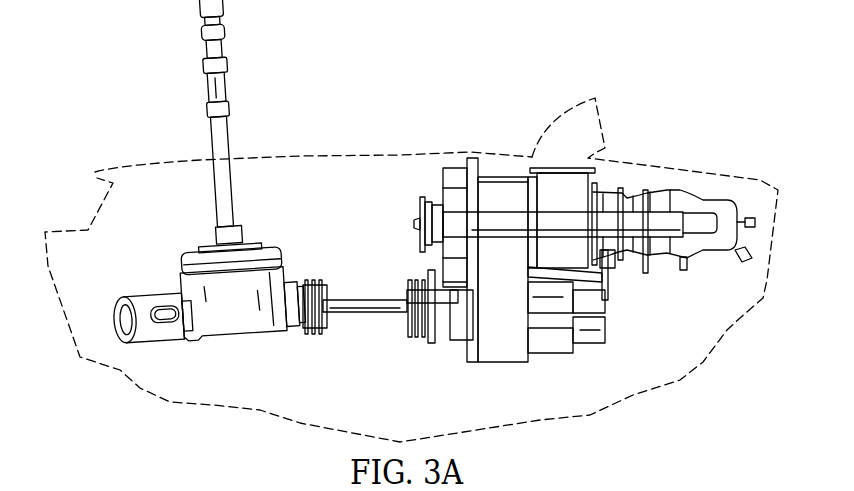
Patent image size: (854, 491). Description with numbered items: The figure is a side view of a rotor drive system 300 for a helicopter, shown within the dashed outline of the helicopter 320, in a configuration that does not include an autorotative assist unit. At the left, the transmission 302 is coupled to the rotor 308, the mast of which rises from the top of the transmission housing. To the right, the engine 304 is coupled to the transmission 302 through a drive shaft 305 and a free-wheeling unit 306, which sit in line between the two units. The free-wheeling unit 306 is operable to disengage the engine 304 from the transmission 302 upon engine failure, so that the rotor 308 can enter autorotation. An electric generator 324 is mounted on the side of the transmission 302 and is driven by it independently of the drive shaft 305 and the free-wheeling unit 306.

The rotor drive system 300 is at (494, 80).
The transmission 302 is at (258, 348).
The engine 304 is at (628, 312).
The drive shaft 305 is at (367, 297).
The free-wheeling unit 306 is at (465, 342).
The rotor 308 is at (229, 90).
The vehicle body structure 320 is at (116, 163).
The electric generator 324 is at (147, 291).